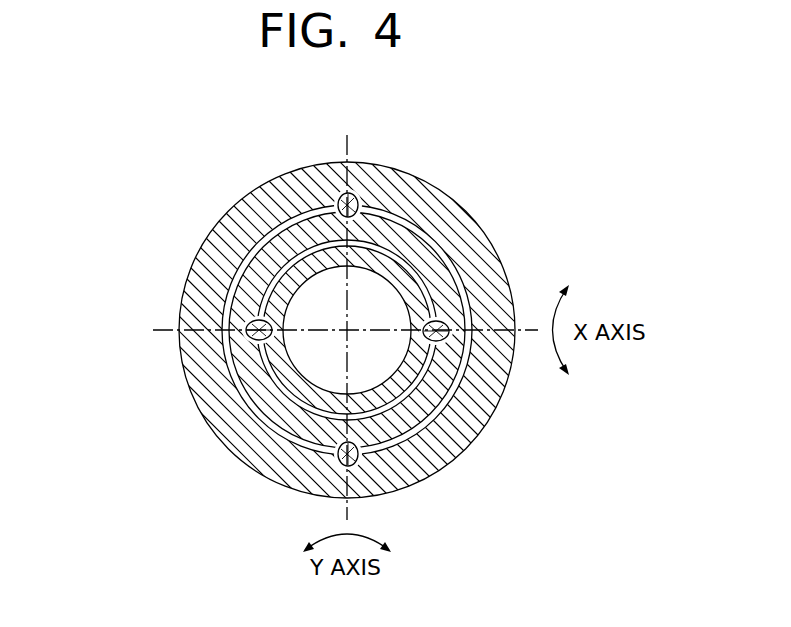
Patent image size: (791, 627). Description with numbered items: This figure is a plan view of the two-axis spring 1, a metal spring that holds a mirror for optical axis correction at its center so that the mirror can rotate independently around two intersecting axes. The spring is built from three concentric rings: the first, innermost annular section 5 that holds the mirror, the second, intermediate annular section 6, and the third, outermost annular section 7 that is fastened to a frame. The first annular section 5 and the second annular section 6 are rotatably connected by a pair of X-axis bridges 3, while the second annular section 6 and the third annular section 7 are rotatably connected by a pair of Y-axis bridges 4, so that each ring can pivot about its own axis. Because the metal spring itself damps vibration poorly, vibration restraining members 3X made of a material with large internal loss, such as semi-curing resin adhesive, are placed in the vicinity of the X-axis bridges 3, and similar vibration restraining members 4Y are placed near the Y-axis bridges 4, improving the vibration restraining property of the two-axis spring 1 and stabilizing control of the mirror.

The two-axis spring 1 is at (476, 472).
The X-axis bridges 3 is at (240, 392).
The vibration restraining members 3X is at (242, 348).
The Y-axis bridges 4 is at (370, 208).
The vibration restraining members 4Y is at (329, 198).
The first annular section 5 is at (322, 258).
The second annular section 6 is at (267, 263).
The third annular section 7 is at (212, 287).